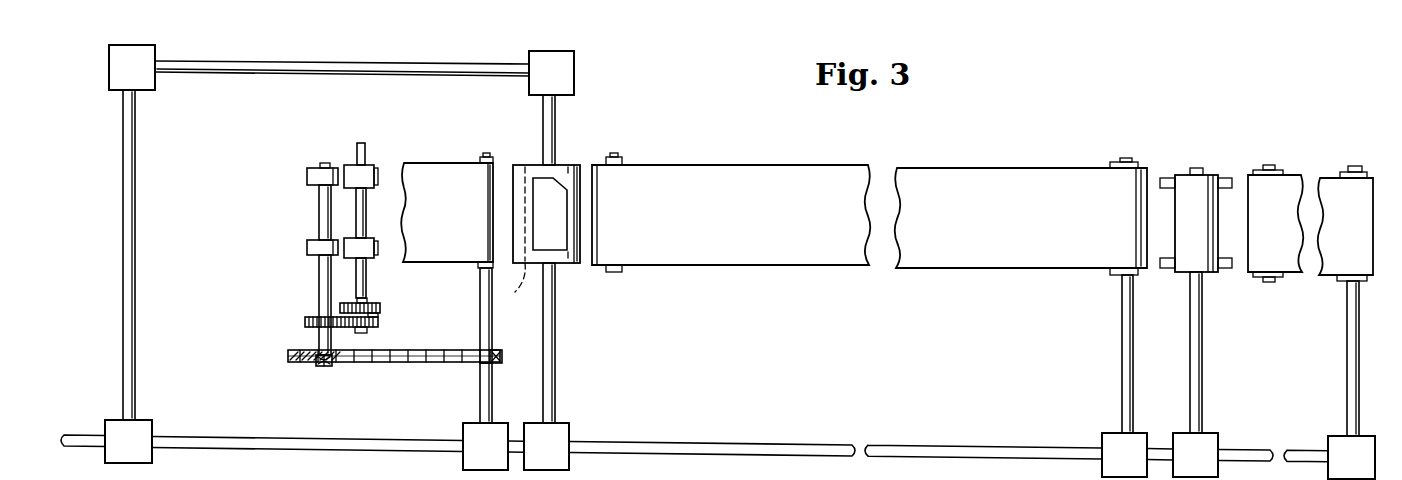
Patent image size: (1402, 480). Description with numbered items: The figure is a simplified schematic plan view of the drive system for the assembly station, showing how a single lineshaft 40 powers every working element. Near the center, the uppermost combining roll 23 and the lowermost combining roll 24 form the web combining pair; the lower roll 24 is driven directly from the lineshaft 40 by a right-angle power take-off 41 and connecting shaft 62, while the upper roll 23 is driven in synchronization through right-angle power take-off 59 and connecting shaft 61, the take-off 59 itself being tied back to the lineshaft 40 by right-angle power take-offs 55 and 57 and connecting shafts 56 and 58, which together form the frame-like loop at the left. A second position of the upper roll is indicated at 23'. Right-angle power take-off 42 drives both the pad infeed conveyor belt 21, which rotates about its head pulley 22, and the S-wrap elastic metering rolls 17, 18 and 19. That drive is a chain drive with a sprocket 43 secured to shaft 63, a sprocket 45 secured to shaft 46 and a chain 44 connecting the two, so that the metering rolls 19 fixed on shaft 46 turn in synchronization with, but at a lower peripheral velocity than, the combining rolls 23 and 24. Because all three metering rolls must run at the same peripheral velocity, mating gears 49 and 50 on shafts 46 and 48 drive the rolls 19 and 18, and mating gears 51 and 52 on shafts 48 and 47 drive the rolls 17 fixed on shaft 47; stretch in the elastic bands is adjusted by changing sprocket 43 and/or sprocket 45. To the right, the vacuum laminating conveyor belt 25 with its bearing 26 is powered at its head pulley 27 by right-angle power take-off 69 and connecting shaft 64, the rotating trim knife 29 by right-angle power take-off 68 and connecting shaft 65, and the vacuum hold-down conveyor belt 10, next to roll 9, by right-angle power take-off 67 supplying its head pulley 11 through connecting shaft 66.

The feed roll 9 is at (1258, 170).
The vacuum hold-down conveyor belt 10 is at (1320, 273).
The head pulley 11 is at (1340, 172).
The elastic metering roll 17 is at (374, 170).
The elastic metering roll 18 is at (375, 178).
The elastic metering roll 19 is at (308, 175).
The pad infeed conveyor belt 21 is at (445, 262).
The head pulley 22 is at (483, 158).
The uppermost combining roll 23 is at (556, 196).
The carriage block alternate position 23' is at (562, 286).
The lowermost combining roll 24 is at (492, 272).
The vacuum laminating conveyor belt 25 is at (795, 166).
The roller bearing 26 is at (621, 158).
The head pulley 27 is at (1112, 163).
The trim knife 29 is at (1180, 175).
The lineshaft 40 is at (85, 437).
The right-angle power take-off 41 is at (569, 430).
The right-angle power take-off 42 is at (463, 435).
The sprocket 43 is at (497, 352).
The chain 44 is at (400, 362).
The sprocket 45 is at (316, 362).
The shaft 46 is at (319, 224).
The shaft 47 is at (357, 148).
The shaft 48 is at (368, 303).
The gear 49 is at (305, 321).
The gear 50 is at (367, 330).
The gear 51 is at (380, 312).
The gear 52 is at (345, 303).
The right-angle power take-off 55 is at (152, 419).
The connecting shaft 56 is at (135, 272).
The right-angle power take-off 57 is at (152, 45).
The connecting shaft 58 is at (290, 62).
The right-angle power take-off 59 is at (580, 46).
The connecting shaft 61 is at (556, 122).
The connecting shaft 62 is at (556, 336).
The shaft 63 is at (492, 394).
The connecting shaft 64 is at (1133, 356).
The connecting shaft 65 is at (1203, 356).
The connecting shaft 66 is at (1347, 356).
The right-angle power take-off 67 is at (1328, 441).
The right-angle power take-off 68 is at (1218, 437).
The right-angle power take-off 69 is at (1102, 436).